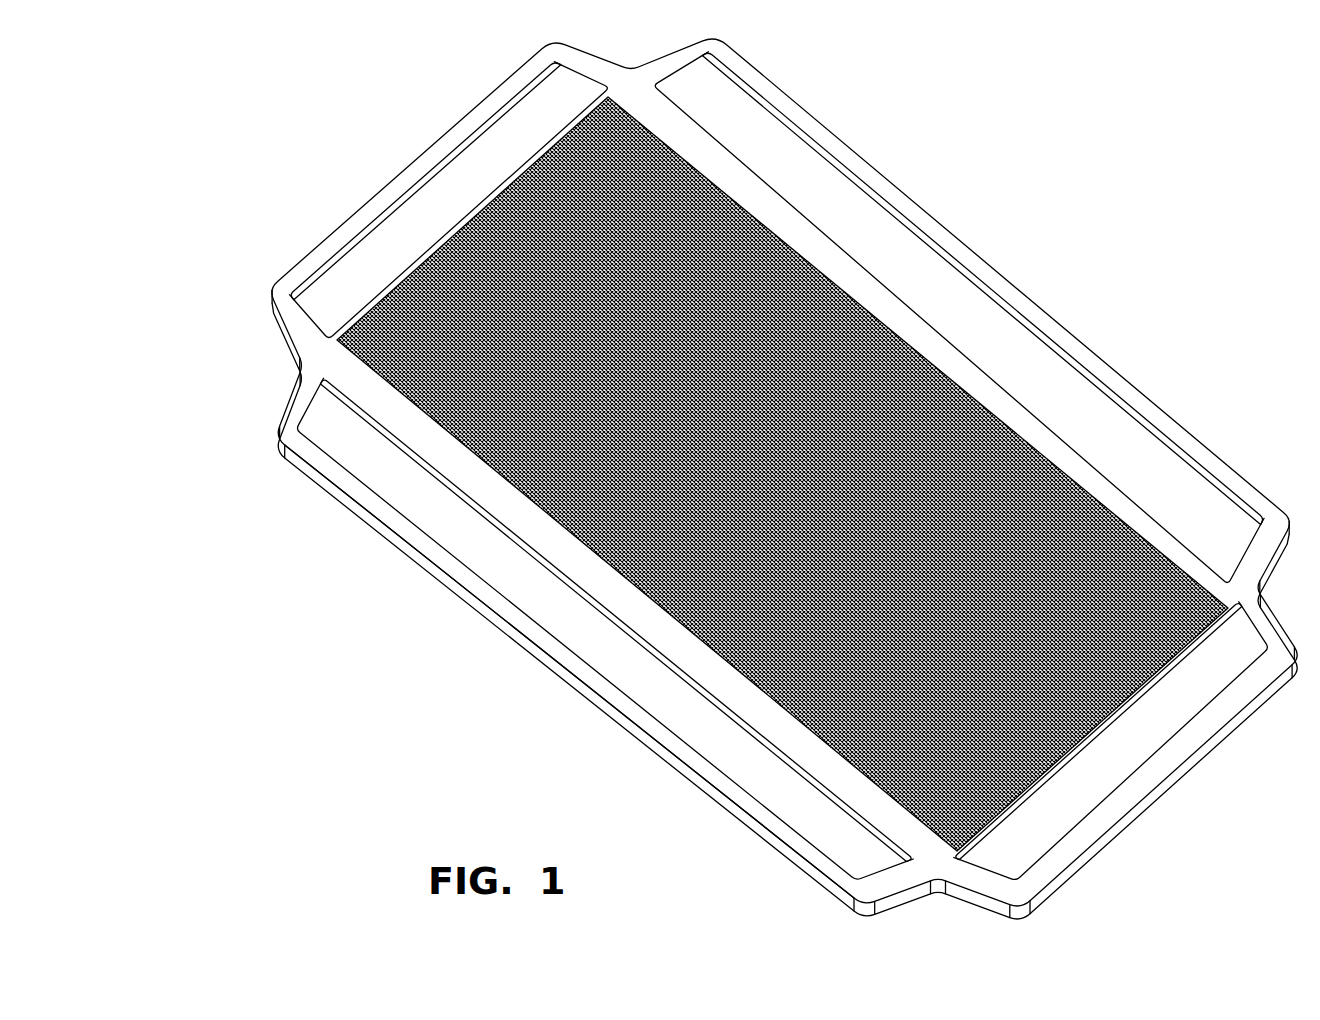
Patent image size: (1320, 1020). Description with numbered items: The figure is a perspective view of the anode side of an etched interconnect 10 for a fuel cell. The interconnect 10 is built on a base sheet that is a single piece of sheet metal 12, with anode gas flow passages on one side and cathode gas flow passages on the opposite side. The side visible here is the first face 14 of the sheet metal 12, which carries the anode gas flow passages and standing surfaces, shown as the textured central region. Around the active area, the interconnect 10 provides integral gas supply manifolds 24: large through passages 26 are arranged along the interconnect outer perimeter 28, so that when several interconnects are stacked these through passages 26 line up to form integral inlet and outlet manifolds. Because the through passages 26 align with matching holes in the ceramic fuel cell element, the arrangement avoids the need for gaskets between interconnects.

The etched interconnect 10 is at (766, 479).
The sheet metal 12 is at (1040, 768).
The first face 14 is at (900, 318).
The integral gas supply manifolds 24 is at (418, 495).
The through passages 26 is at (493, 560).
The interconnect outer perimeter 28 is at (597, 593).